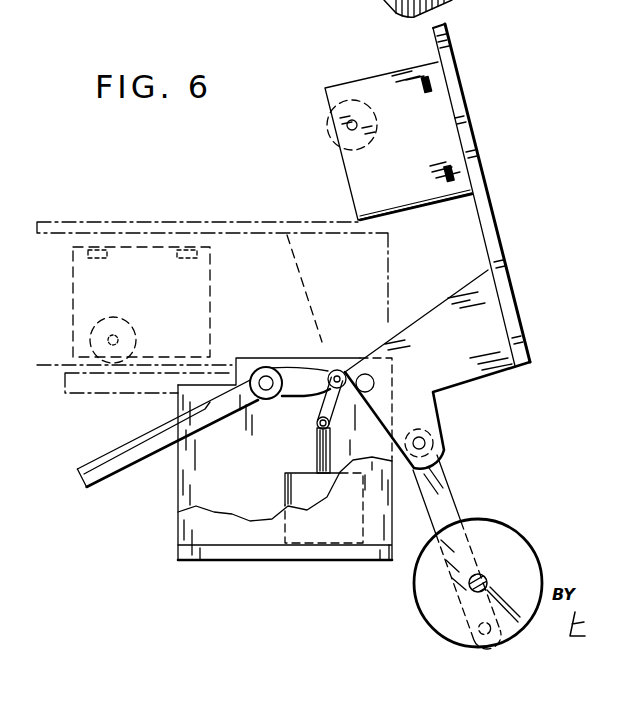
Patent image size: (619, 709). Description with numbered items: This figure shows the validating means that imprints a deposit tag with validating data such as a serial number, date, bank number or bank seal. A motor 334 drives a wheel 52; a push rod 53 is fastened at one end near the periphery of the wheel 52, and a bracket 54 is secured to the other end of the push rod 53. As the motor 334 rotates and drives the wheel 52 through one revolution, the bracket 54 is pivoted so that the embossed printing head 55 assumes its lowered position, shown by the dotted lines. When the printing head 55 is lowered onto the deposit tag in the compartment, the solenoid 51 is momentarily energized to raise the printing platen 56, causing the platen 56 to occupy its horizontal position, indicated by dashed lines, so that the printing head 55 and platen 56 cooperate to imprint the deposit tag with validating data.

The solenoid 51 is at (284, 474).
The wheel 52 is at (495, 520).
The push rod 53 is at (448, 475).
The bracket 54 is at (387, 284).
The embossed printing head 55 is at (333, 133).
The printing platen 56 is at (130, 443).
The motor 334 is at (533, 542).